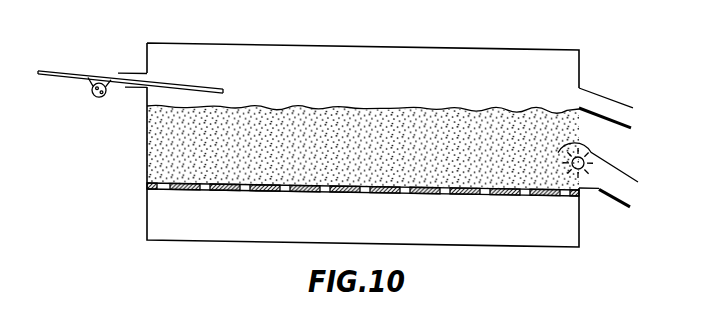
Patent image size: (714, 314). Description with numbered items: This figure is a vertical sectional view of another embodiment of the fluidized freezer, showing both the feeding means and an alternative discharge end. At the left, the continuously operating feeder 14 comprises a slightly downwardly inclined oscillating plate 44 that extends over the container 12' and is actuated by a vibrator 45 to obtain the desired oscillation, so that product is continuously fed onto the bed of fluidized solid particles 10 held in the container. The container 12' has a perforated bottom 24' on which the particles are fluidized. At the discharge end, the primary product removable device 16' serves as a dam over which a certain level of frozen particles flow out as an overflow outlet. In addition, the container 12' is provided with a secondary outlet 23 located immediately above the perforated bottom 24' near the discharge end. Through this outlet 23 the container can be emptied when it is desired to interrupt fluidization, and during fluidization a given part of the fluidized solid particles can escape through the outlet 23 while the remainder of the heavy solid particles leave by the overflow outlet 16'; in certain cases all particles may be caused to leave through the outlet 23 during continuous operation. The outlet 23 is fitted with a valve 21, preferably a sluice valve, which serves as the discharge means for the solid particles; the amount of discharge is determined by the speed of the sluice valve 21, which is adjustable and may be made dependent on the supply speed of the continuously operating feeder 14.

The container 12' is at (348, 128).
The continuously operating feeder 14 is at (55, 72).
The oscillating plate 44 is at (204, 87).
The vibrator 45 is at (100, 98).
The particulate material bed 10 is at (497, 116).
The primary product removable device 16' is at (606, 96).
The sluice valve 21 is at (581, 149).
The secondary outlet 23 is at (603, 168).
The perforated bottom 24' is at (363, 207).